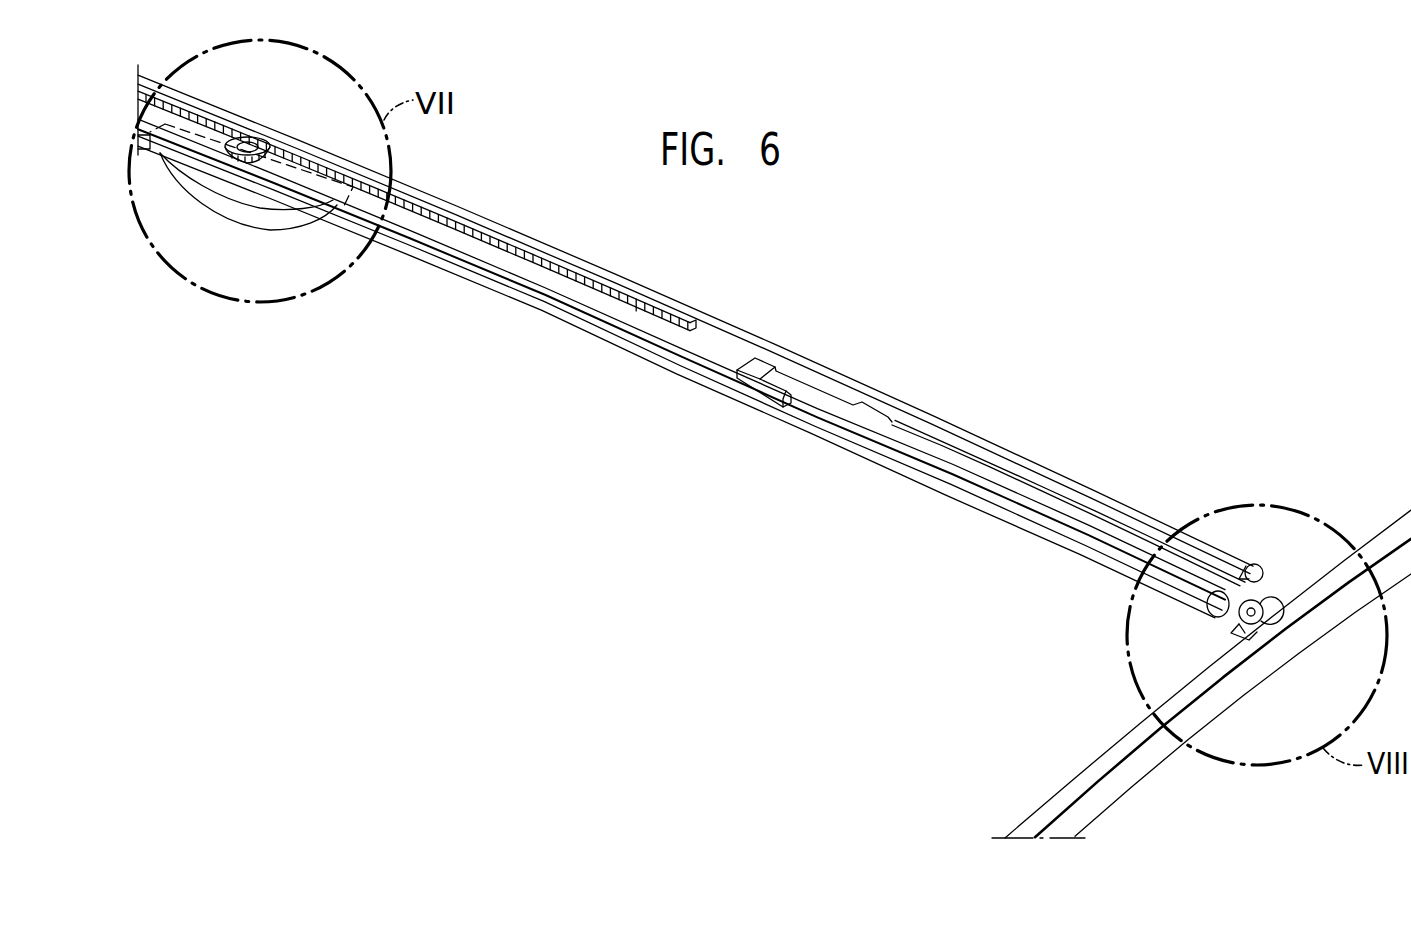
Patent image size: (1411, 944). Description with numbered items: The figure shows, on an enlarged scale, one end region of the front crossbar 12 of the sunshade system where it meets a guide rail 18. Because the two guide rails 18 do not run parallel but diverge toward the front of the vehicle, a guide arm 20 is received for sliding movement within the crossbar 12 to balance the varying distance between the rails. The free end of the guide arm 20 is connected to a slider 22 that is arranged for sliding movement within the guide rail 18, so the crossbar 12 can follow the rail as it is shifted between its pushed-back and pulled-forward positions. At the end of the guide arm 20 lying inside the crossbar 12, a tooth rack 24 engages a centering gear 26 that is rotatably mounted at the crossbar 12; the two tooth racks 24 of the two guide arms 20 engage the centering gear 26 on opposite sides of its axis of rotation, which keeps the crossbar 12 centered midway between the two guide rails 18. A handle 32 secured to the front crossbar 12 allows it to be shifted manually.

The front crossbar 12 is at (733, 358).
The guide rail 18 is at (1103, 798).
The guide arm 20 is at (1075, 511).
The slider 22 is at (1238, 627).
The tooth rack 24 is at (467, 217).
The centering gear 26 is at (263, 145).
The handle 32 is at (269, 218).